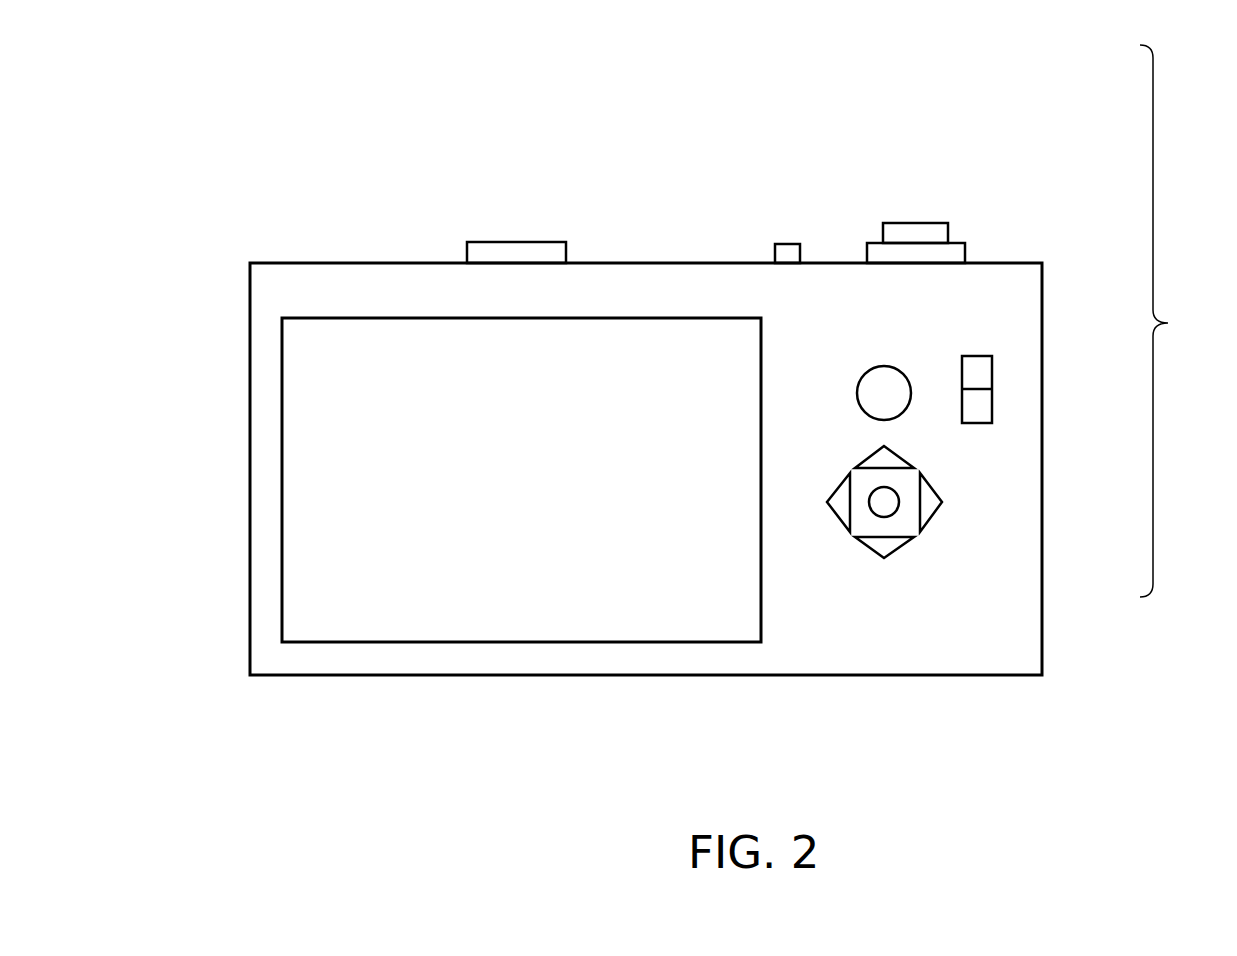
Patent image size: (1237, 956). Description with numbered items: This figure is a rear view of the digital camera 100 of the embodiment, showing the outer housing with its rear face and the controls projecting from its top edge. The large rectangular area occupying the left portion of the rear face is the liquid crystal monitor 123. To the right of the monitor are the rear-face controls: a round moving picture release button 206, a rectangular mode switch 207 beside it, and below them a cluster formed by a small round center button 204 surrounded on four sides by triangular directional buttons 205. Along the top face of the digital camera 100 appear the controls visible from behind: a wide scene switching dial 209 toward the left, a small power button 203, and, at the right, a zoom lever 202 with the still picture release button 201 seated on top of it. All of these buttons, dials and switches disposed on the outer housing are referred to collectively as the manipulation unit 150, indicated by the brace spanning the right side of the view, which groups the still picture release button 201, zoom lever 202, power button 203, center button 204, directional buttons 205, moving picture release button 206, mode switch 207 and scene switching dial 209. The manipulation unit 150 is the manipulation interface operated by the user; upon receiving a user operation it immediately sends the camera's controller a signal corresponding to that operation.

The digital camera 100 is at (243, 186).
The liquid crystal monitor 123 is at (458, 470).
The manipulation unit 150 is at (1184, 321).
The still picture release button 201 is at (935, 232).
The zoom lever 202 is at (955, 256).
The power button 203 is at (780, 244).
The center button 204 is at (884, 502).
The directional buttons 205 is at (885, 545).
The moving picture release button 206 is at (884, 393).
The mode switch 207 is at (972, 397).
The scene switching dial 209 is at (517, 253).